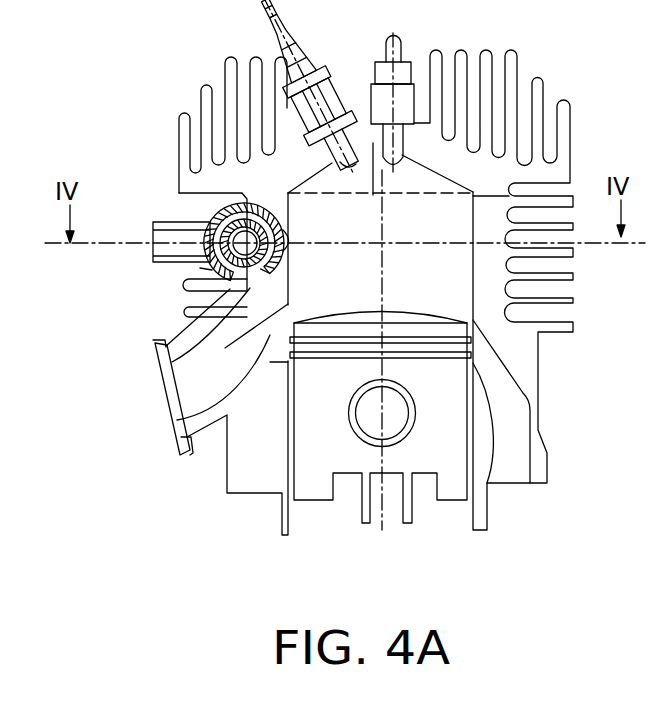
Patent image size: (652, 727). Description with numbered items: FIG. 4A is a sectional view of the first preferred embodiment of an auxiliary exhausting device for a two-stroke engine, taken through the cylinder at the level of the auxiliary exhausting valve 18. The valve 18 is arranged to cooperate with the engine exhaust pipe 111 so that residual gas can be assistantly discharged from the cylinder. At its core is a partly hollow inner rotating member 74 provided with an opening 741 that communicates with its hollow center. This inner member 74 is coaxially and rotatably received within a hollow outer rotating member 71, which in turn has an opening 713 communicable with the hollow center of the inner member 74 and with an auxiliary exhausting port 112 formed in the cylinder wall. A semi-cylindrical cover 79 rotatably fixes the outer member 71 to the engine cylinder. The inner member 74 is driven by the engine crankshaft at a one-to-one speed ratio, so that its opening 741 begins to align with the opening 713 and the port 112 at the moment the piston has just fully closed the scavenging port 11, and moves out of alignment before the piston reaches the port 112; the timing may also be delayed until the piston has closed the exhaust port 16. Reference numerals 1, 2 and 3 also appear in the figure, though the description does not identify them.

The intake pipe flange 1 is at (156, 353).
The intake port 2 is at (252, 262).
The reed valve 3 is at (276, 258).
The scavenging port 11 is at (477, 348).
The exhaust port 16 is at (180, 448).
The auxiliary exhausting valve 18 is at (262, 190).
The hollow outer rotating member 71 is at (183, 315).
The partly hollow inner rotating member 74 is at (182, 288).
The semi-cylindrical cover 79 is at (210, 213).
The engine exhaust pipe 111 is at (158, 393).
The auxiliary exhausting port 112 is at (288, 233).
The opening of outer rotating member 713 is at (152, 231).
The opening of inner rotating member 741 is at (200, 268).